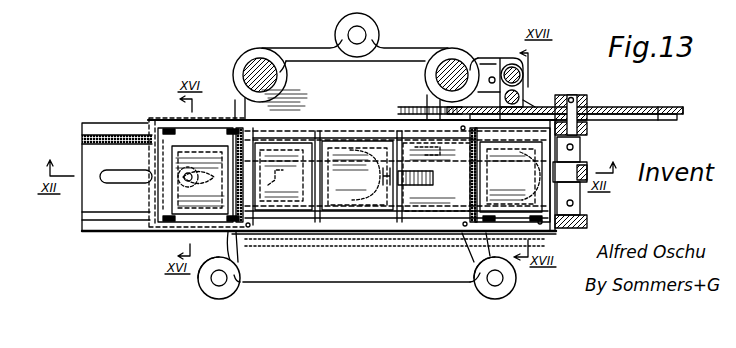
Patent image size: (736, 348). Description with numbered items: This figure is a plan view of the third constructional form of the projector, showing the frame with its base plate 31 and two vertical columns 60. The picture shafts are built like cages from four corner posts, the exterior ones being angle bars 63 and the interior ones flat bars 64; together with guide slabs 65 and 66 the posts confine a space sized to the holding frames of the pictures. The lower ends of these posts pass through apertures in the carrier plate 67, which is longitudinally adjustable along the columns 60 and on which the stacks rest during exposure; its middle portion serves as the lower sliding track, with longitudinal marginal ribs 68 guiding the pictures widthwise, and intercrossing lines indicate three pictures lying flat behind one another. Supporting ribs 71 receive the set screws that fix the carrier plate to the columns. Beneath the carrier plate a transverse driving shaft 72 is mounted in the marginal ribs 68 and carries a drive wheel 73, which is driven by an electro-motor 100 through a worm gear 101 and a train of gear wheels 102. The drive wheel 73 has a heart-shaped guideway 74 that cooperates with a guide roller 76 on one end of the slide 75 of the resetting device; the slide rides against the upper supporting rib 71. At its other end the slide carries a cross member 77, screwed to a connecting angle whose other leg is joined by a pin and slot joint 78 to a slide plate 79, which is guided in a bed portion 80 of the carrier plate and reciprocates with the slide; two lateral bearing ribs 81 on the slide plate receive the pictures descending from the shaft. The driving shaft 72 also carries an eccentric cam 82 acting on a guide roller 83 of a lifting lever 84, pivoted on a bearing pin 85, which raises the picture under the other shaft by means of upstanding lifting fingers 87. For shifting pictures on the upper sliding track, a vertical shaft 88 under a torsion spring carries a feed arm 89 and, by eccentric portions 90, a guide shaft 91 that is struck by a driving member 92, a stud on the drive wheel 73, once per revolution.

The base plate 31 is at (300, 280).
The vertical columns 60 is at (262, 70).
The angle bars 63 is at (168, 129).
The flat bars 64 is at (238, 129).
The guide slab 65 is at (262, 225).
The guide slab 66 is at (240, 167).
The carrier plate 67 is at (82, 147).
The longitudinal marginal ribs 68 is at (110, 128).
The supporting ribs 71 is at (307, 60).
The transverse driving shaft 72 is at (572, 95).
The drive wheel 73 is at (684, 110).
The heart-shaped guideway 74 is at (668, 107).
The slide 75 is at (345, 120).
The guide roller 76 is at (548, 107).
The cross member 77 is at (150, 180).
The pin and slot joint 78 is at (160, 224).
The slide plate 79 is at (160, 205).
The bed portion 80 is at (91, 207).
The lateral bearing ribs 81 is at (158, 150).
The eccentric cam 82 is at (588, 176).
The guide roller 83 is at (585, 165).
The lifting lever 84 is at (341, 204).
The bearing pin 85 is at (265, 212).
The lifting fingers 87 is at (510, 213).
The vertical shaft 88 is at (510, 64).
The feed arm 89 is at (540, 112).
The eccentric portions 90 is at (507, 64).
The guide shaft 91 is at (508, 91).
The driving member 92 is at (545, 108).
The electro-motor 100 is at (374, 219).
The rack 101 is at (413, 185).
The train of gear wheels 102 is at (428, 106).